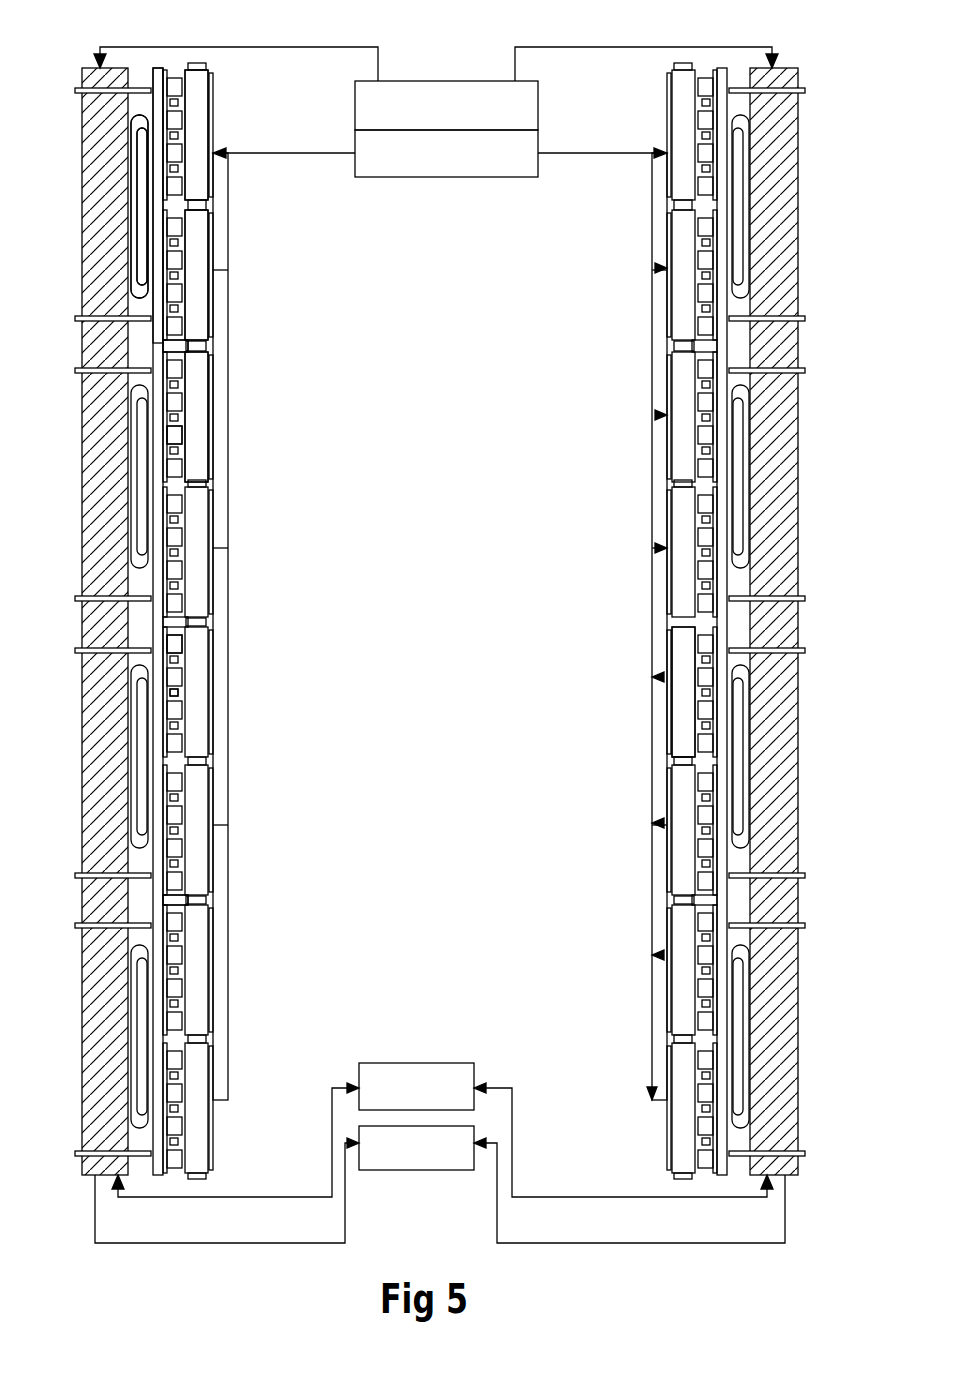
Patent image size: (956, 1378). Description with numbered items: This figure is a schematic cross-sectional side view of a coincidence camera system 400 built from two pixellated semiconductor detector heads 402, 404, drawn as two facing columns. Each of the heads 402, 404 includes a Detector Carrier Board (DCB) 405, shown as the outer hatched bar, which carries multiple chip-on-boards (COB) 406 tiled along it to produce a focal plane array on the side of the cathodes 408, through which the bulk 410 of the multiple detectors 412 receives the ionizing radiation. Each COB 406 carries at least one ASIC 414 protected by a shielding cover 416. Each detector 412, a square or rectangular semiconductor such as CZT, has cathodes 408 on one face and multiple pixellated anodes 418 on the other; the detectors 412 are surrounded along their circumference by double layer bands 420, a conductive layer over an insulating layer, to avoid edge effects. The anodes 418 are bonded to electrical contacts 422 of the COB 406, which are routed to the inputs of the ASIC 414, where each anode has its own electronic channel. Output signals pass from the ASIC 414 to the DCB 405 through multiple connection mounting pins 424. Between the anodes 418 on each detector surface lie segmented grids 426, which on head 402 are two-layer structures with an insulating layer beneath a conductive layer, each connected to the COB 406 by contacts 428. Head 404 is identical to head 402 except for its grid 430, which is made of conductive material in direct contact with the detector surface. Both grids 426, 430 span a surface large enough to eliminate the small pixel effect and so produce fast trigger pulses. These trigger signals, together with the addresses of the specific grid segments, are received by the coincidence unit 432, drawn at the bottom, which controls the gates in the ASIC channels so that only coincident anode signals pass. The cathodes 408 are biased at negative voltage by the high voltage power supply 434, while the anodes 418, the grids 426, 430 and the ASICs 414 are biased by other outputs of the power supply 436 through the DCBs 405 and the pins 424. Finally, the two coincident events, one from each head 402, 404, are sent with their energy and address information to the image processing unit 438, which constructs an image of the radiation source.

The linear motor system 400 is at (410, 1211).
The detector head 402 is at (444, 655).
The detector head 404 is at (651, 680).
The Detector Carrier Board (DCB) 405 is at (90, 150).
The chip-on-board (COB) 406 is at (153, 72).
The cathodes 408 is at (212, 113).
The bulk 410 is at (192, 248).
The detectors 412 is at (193, 386).
The ASIC 414 is at (146, 130).
The shielding cover 416 is at (135, 385).
The pixellated anodes 418 is at (180, 436).
The double layer bands 420 is at (190, 620).
The electrical contacts 422 is at (175, 648).
The connection mounting pins 424 is at (84, 300).
The grids 426 is at (175, 700).
The contacts 428 is at (175, 910).
The grid 430 is at (692, 703).
The coincidence unit 432 is at (404, 1078).
The high voltage power supply 434 is at (437, 165).
The power supply 436 is at (405, 92).
The image processing unit 438 is at (382, 1152).